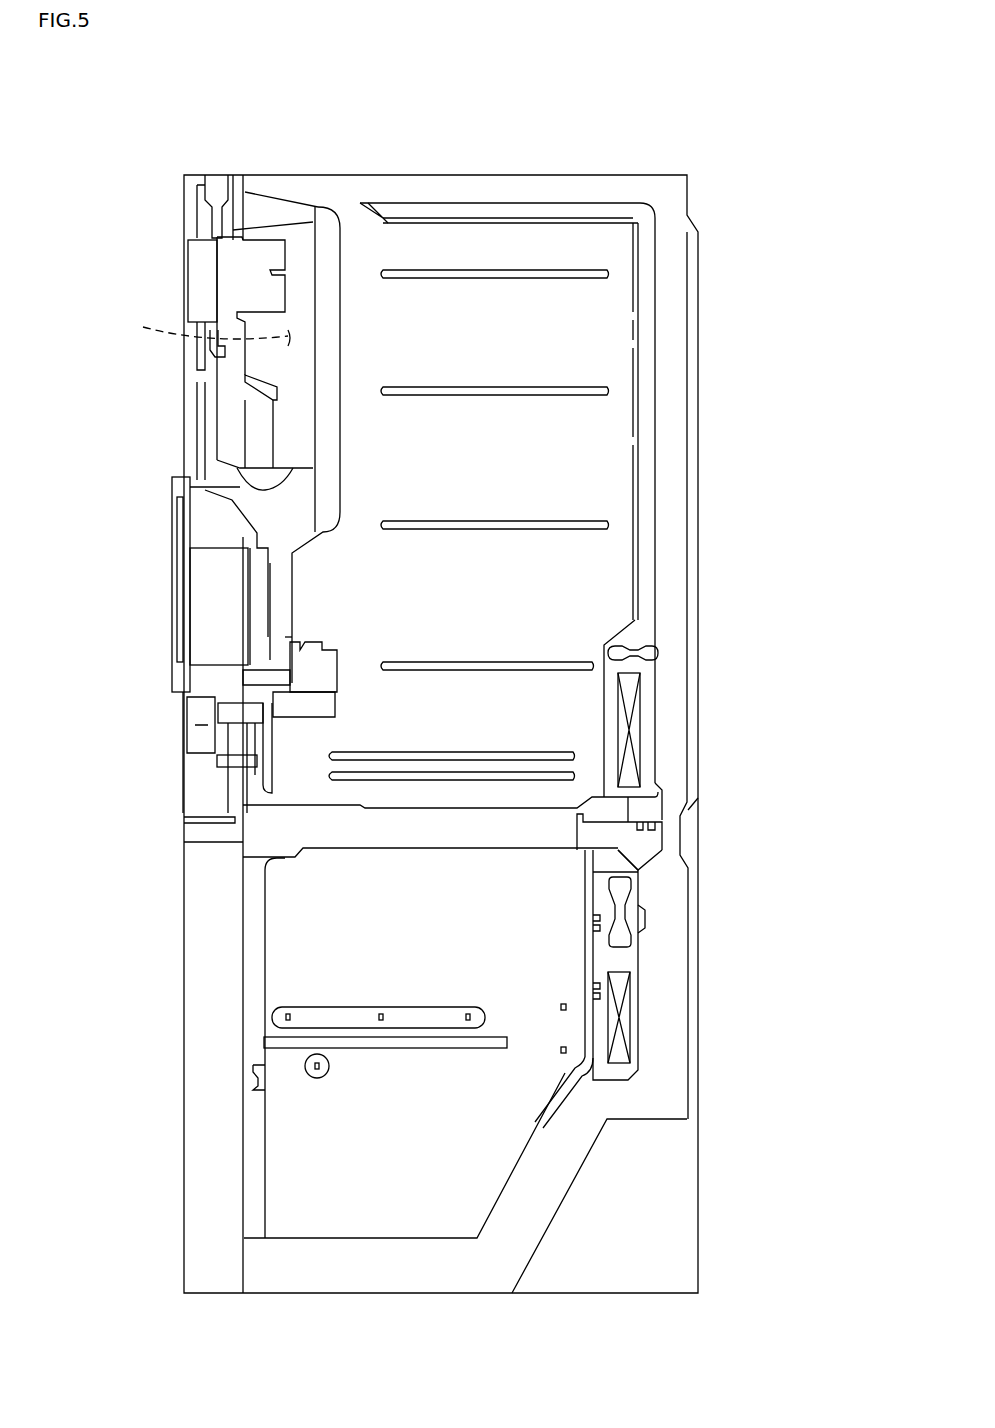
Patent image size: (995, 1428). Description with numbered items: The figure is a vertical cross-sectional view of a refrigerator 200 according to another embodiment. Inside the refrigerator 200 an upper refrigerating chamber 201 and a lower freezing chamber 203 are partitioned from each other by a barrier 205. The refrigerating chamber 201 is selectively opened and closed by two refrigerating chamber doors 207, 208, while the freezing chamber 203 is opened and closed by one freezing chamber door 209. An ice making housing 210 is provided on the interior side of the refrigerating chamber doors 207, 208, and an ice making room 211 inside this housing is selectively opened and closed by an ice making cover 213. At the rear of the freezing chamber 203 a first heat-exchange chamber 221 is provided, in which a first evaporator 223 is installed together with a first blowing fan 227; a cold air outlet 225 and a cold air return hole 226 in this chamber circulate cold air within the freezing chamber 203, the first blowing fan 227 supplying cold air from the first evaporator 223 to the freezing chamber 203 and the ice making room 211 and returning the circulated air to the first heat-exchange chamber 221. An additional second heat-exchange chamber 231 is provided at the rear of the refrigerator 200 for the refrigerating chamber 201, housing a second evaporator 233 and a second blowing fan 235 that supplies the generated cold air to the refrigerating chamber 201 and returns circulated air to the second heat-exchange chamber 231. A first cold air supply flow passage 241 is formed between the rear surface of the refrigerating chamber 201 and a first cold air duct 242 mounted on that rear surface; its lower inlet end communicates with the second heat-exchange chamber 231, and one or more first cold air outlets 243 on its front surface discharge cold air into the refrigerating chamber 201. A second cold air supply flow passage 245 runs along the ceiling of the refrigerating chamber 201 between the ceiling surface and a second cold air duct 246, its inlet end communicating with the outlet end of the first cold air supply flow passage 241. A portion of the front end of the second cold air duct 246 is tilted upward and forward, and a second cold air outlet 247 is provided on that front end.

The refrigerator 200 is at (676, 152).
The refrigerating chamber 201 is at (506, 244).
The freezing chamber 203 is at (403, 1204).
The barrier 205 is at (267, 880).
The refrigerating chamber door 207 is at (192, 525).
The refrigerating chamber door 208 is at (251, 348).
The freezing chamber door 209 is at (182, 1091).
The ice making housing 210 is at (258, 188).
The ice making room 211 is at (196, 331).
The ice making cover 213 is at (345, 247).
The first heat-exchange chamber 221 is at (634, 922).
The first evaporator 223 is at (627, 1018).
The cold air outlet 225 is at (592, 901).
The cold air return hole 226 is at (538, 1120).
The first blowing fan 227 is at (623, 940).
The second heat-exchange chamber 231 is at (650, 702).
The second evaporator 233 is at (637, 747).
The second blowing fan 235 is at (658, 656).
The first cold air supply flow passage 241 is at (650, 524).
The first cold air duct 242 is at (633, 470).
The first cold air outlet 243 is at (640, 322).
The second cold air supply flow passage 245 is at (572, 208).
The second cold air duct 246 is at (585, 225).
The second cold air outlet 247 is at (380, 209).